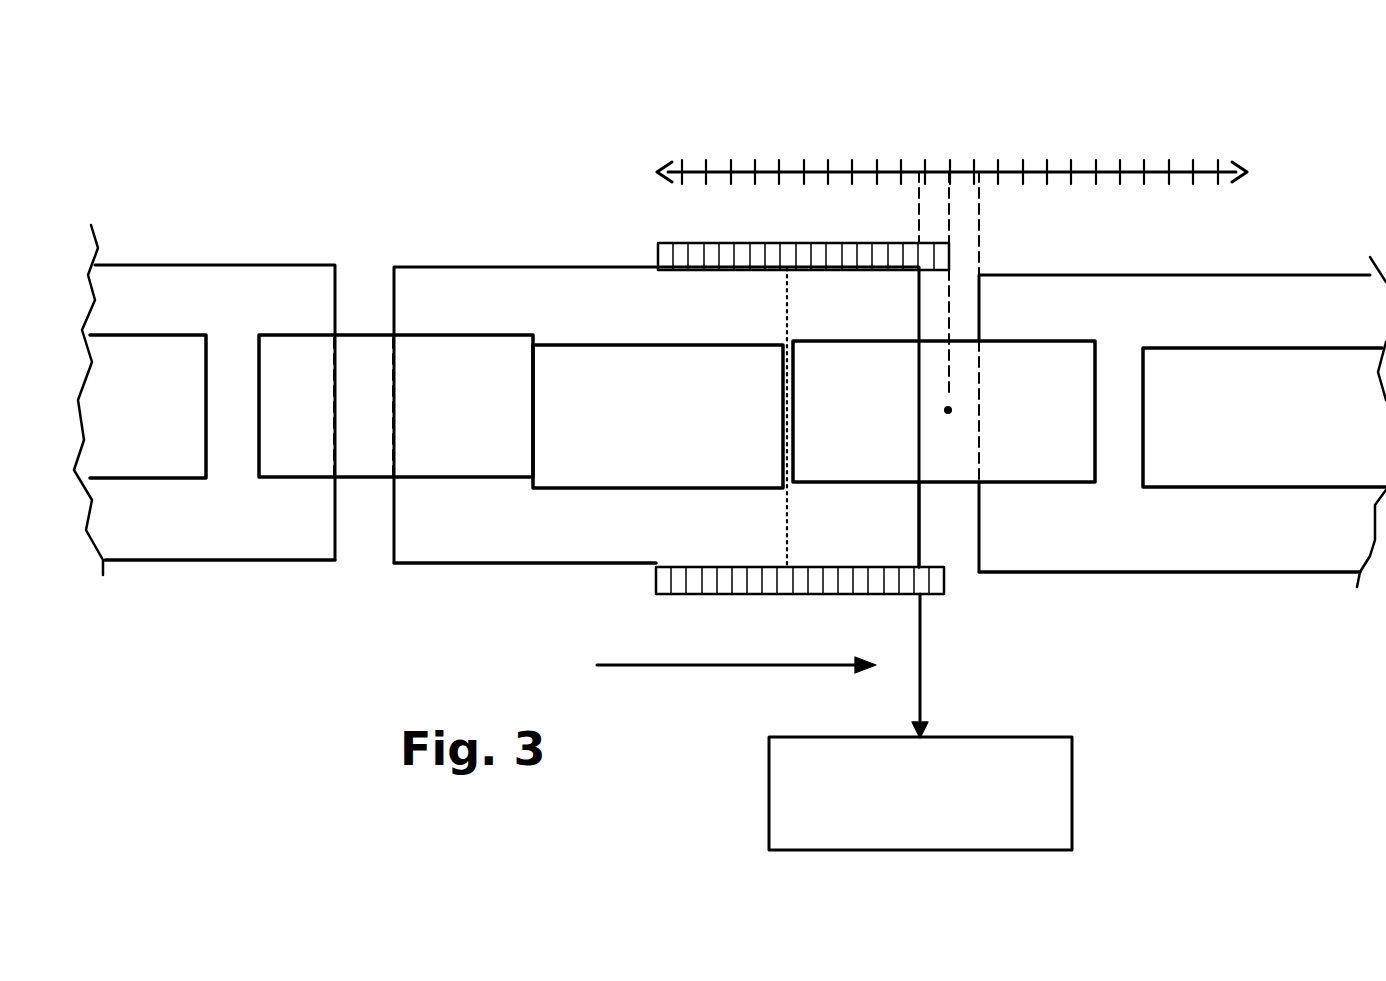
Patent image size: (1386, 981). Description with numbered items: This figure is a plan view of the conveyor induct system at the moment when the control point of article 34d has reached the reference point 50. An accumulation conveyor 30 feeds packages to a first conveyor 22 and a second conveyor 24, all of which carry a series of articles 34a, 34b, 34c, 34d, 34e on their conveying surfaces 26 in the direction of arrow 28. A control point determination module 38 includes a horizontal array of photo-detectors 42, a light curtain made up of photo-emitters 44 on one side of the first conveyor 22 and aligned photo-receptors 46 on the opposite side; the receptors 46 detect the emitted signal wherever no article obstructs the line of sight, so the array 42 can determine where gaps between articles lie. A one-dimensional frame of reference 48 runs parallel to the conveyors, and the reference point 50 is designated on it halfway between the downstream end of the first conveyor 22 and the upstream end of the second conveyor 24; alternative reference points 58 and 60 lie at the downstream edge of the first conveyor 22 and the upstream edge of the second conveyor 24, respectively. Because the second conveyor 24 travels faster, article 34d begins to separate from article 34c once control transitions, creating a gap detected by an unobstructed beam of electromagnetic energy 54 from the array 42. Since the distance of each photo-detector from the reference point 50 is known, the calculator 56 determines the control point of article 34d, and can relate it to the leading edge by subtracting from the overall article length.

The control point determination module 38 is at (305, 110).
The accumulation conveyor 30 is at (200, 265).
The first conveyor 22 is at (455, 567).
The second conveyor 24 is at (1082, 572).
The conveying surface 26 is at (237, 538).
The article 34a is at (130, 335).
The article 34b is at (428, 335).
The article 34c is at (595, 345).
The article 34d is at (815, 341).
The article 34e is at (1195, 348).
The photo-receptors 46 is at (755, 243).
The photo-emitters 44 is at (690, 594).
The frame of reference 48 is at (1212, 165).
The reference point 58 is at (919, 170).
The reference point 50 is at (950, 170).
The reference point 60 is at (980, 170).
The unobstructed beam of electromagnetic energy 54 is at (790, 527).
The horizontal array of photo-detectors 42 is at (945, 603).
The arrow 28 is at (720, 668).
The calculator 56 is at (1033, 737).